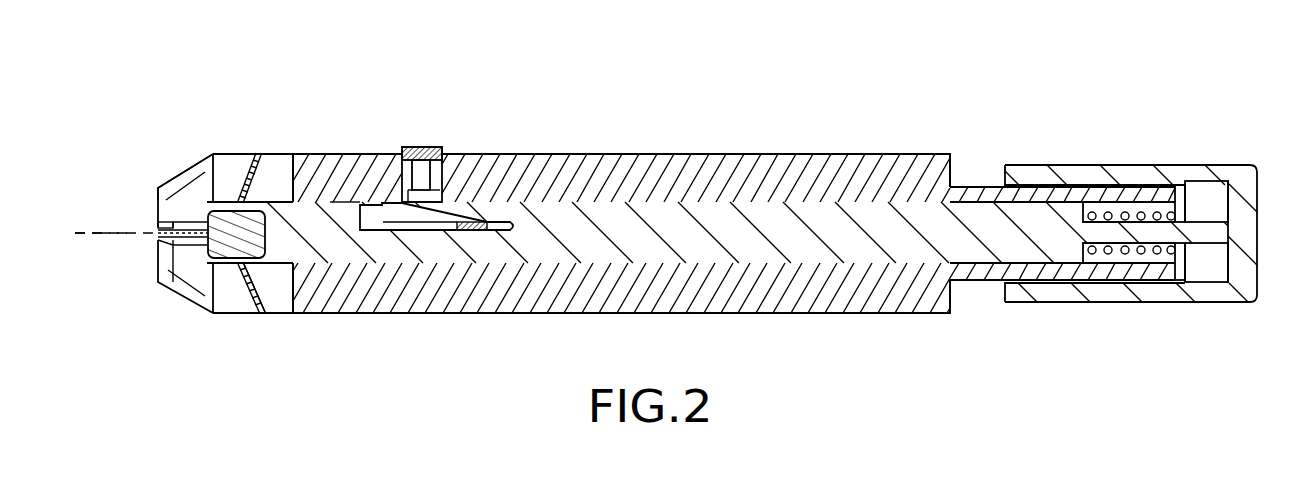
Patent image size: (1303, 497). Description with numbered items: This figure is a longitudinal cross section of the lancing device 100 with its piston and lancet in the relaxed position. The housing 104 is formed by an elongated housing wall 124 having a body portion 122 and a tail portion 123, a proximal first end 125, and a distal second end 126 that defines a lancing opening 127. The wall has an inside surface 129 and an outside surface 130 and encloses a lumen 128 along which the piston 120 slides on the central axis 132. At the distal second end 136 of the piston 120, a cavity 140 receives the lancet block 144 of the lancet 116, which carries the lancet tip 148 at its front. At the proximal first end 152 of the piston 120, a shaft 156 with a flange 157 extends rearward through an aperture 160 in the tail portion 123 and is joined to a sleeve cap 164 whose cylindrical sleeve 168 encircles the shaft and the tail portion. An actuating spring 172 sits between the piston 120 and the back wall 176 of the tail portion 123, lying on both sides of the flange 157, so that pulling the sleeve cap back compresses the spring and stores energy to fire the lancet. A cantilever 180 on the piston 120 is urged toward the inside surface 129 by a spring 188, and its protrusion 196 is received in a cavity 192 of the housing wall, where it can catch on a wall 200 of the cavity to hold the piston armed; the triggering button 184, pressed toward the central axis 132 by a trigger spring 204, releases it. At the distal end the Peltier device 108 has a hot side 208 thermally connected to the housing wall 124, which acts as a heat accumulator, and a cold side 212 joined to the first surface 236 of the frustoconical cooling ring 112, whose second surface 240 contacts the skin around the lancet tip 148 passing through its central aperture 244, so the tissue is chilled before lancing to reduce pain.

The lancing device 100 is at (824, 101).
The housing 104 is at (614, 155).
The Peltier device 108 is at (257, 152).
The cooling ring 112 is at (167, 178).
The lancet 116 is at (193, 217).
The piston 120 is at (858, 263).
The body portion 122 is at (790, 153).
The tail portion 123 is at (978, 187).
The housing wall 124 is at (690, 153).
The first end 125 is at (1203, 194).
The second end 126 is at (300, 165).
The lancing opening 127 is at (340, 190).
The lumen 128 is at (1112, 211).
The inside surface 129 is at (910, 196).
The outside surface 130 is at (880, 153).
The central axis 132 is at (82, 233).
The second end 136 is at (265, 198).
The cavity 140 is at (228, 201).
The lancet block 144 is at (213, 298).
The lancet tip 148 is at (200, 252).
The first end 152 is at (1088, 192).
The shaft 156 is at (1220, 284).
The flange 157 is at (1116, 212).
The aperture 160 is at (1182, 185).
The sleeve cap 164 is at (1164, 302).
The cylindrical sleeve 168 is at (1028, 305).
The actuating spring 172 is at (1100, 252).
The back wall 176 is at (1197, 283).
The cantilever 180 is at (512, 205).
The triggering button 184 is at (440, 190).
The spring 188 is at (455, 231).
The cavity 192 is at (497, 212).
The protrusion 196 is at (388, 187).
The wall 200 is at (404, 150).
The trigger spring 204 is at (436, 150).
The hot side 208 is at (292, 311).
The cold side 212 is at (250, 307).
The first surface 236 is at (218, 294).
The second surface 240 is at (158, 240).
The central aperture 244 is at (158, 227).